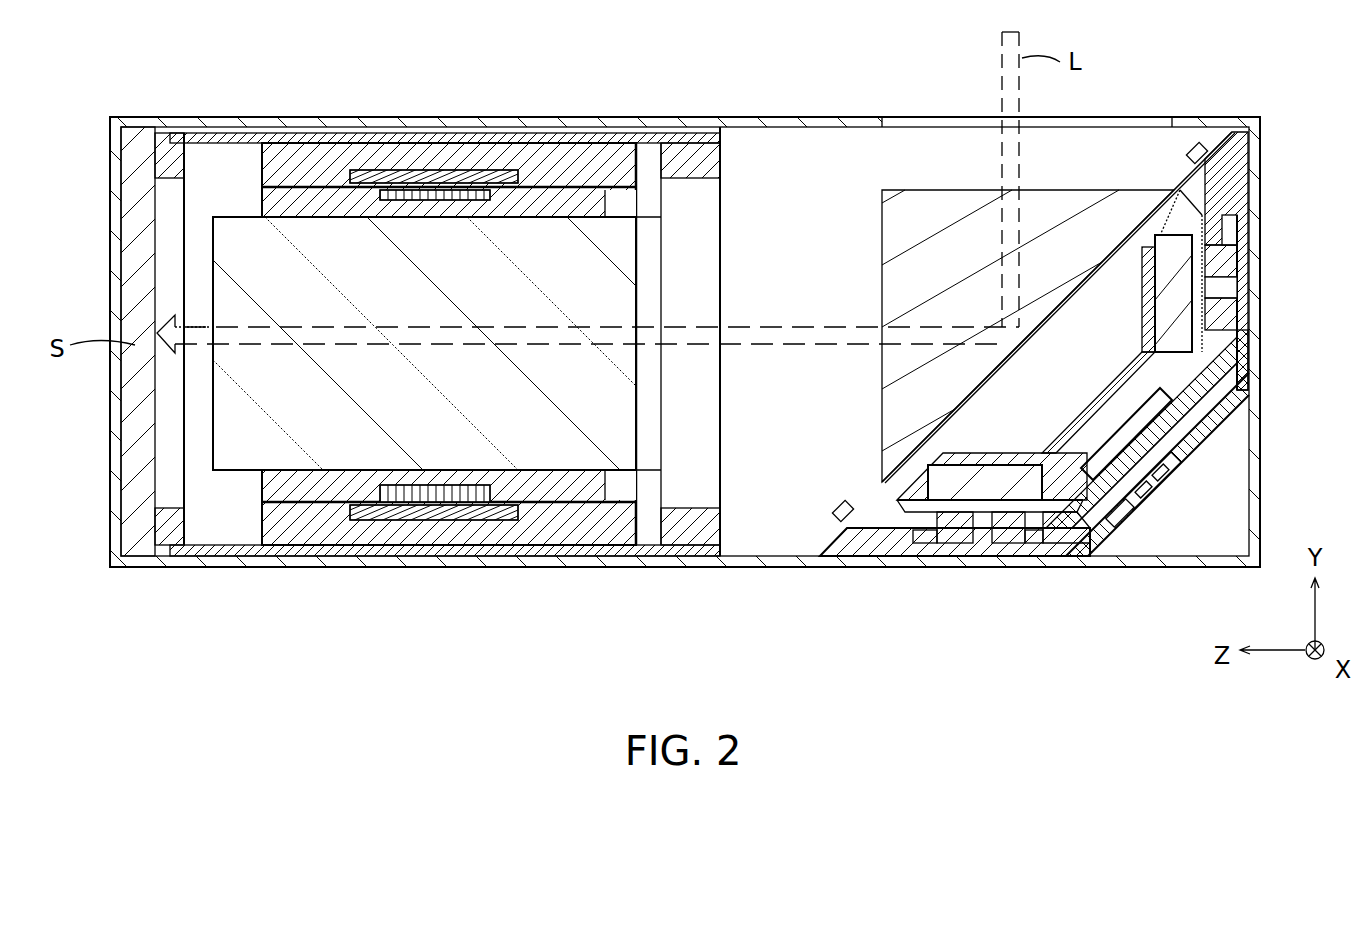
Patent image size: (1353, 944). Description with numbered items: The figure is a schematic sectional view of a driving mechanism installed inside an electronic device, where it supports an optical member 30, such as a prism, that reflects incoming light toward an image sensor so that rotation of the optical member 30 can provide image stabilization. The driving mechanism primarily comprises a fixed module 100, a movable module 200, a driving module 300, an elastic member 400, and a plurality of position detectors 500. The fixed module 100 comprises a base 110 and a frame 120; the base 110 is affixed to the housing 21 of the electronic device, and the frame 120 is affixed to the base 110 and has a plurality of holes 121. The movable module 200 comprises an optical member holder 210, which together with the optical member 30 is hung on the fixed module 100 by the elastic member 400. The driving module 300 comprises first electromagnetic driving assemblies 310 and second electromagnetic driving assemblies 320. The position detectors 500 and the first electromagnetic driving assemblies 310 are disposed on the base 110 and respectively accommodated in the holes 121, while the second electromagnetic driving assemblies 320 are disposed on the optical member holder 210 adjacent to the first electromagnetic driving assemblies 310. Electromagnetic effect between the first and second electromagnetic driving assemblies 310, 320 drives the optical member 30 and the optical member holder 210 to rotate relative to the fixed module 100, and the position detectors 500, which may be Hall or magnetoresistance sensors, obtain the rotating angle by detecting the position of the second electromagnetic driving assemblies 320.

The housing 21 is at (790, 562).
The optical member 30 is at (922, 222).
The fixed module 100 is at (1207, 447).
The base 110 is at (1240, 410).
The frame 120 is at (1237, 385).
The holes 121 is at (1249, 360).
The movable module 200 is at (1248, 172).
The optical member holder 210 is at (1172, 190).
The driving module 300 is at (1040, 500).
The first electromagnetic driving assemblies 310 is at (1192, 290).
The second electromagnetic driving assemblies 320 is at (1237, 300).
The elastic member 400 is at (845, 520).
The position detectors 500 is at (1150, 488).